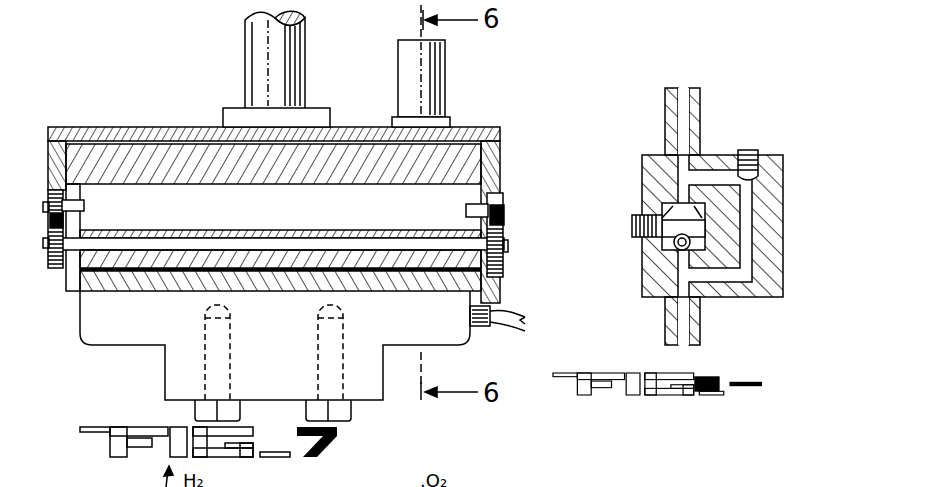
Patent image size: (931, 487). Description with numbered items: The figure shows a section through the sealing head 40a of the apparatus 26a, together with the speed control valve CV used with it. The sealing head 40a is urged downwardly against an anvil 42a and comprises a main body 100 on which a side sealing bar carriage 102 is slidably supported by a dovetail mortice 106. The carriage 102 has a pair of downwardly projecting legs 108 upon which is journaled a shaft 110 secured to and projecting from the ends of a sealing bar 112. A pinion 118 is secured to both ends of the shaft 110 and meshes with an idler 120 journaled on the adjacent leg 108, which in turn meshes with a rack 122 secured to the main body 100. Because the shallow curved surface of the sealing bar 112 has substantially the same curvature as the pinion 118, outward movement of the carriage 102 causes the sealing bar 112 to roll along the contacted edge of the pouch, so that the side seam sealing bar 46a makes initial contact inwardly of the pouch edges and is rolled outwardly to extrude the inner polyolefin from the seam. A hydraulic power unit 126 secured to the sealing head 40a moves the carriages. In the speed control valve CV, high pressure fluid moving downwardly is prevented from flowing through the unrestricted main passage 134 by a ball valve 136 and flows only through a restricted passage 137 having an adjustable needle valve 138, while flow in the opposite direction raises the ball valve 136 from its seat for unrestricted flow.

In FIG. 7, the main body 100 is at (110, 127).
In FIG. 7, the side sealing bar carriage 102 is at (198, 158).
In FIG. 7, the dovetail mortice 106 is at (62, 165).
In FIG. 7, the leg 108 is at (470, 219).
In FIG. 7, the shaft 110 is at (362, 240).
In FIG. 7, the sealing bar 112 is at (262, 268).
In FIG. 7, the pinion 118 is at (43, 268).
In FIG. 7, the idler 120 is at (68, 219).
In FIG. 7, the rack 122 is at (76, 201).
In FIG. 7, the hydraulic power unit 126 is at (394, 76).
In FIG. 7, the apparatus 26a is at (496, 98).
In FIG. 7, the sealing head 40a is at (500, 132).
In FIG. 7, the anvil 42a is at (116, 332).
In FIG. 7, the side seam sealing bar 46a is at (286, 236).
In FIG. 8, the main passage 134 is at (678, 178).
In FIG. 8, the ball valve 136 is at (670, 246).
In FIG. 8, the restricted passage 137 is at (745, 222).
In FIG. 8, the adjustable needle valve 138 is at (752, 150).
In FIG. 8, the speed control valve CV is at (780, 184).